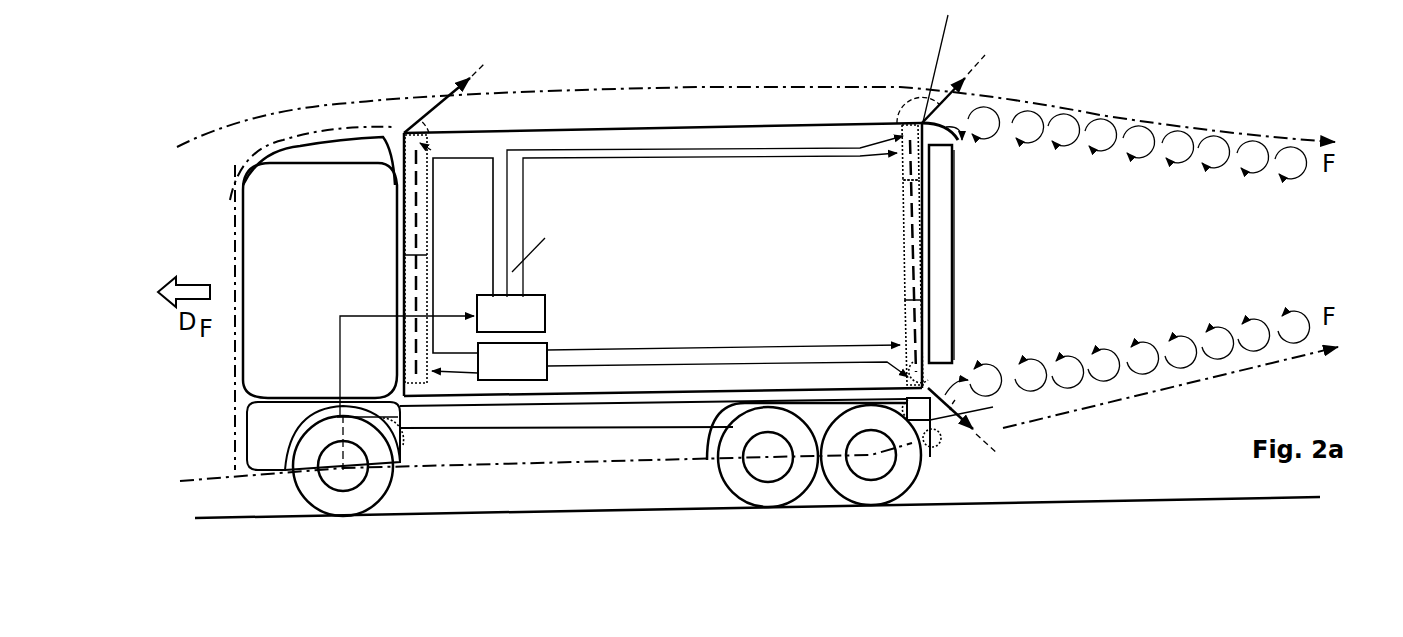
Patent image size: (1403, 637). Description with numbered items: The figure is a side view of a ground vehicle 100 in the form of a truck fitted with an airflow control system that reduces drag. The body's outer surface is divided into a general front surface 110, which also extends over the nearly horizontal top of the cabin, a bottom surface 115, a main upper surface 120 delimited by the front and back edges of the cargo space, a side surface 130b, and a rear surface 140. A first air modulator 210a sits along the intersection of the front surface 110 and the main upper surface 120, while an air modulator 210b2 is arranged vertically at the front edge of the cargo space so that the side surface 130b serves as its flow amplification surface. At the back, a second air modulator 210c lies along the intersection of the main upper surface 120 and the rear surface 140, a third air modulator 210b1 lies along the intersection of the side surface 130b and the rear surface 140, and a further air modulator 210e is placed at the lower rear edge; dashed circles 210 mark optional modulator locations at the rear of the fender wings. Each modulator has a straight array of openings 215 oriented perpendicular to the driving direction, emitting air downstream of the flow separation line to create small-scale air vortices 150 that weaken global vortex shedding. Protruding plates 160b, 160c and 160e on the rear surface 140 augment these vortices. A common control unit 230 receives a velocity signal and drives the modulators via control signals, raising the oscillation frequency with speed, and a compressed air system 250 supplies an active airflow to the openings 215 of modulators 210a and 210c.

The ground vehicle 100 is at (577, 63).
The general front surface 110 is at (235, 175).
The bottom surface 115 is at (560, 430).
The main upper surface 120 is at (627, 128).
The side surface 130b is at (787, 262).
The rear surface 140 is at (925, 297).
The air vortices 150 is at (952, 123).
The protruding plate 160b is at (945, 322).
The protruding plate 160c is at (953, 130).
The protruding plate 160e is at (962, 373).
The air modulators at fender wings 210 is at (403, 443).
The first air modulator 210a is at (410, 130).
The third air modulator 210b1 is at (903, 227).
The air modulator 210b2 is at (407, 267).
The second air modulator 210c is at (913, 123).
The air modulator 210e is at (905, 347).
The array of openings 215 is at (417, 217).
The control unit 230 is at (545, 308).
The compressed air system 250 is at (547, 348).